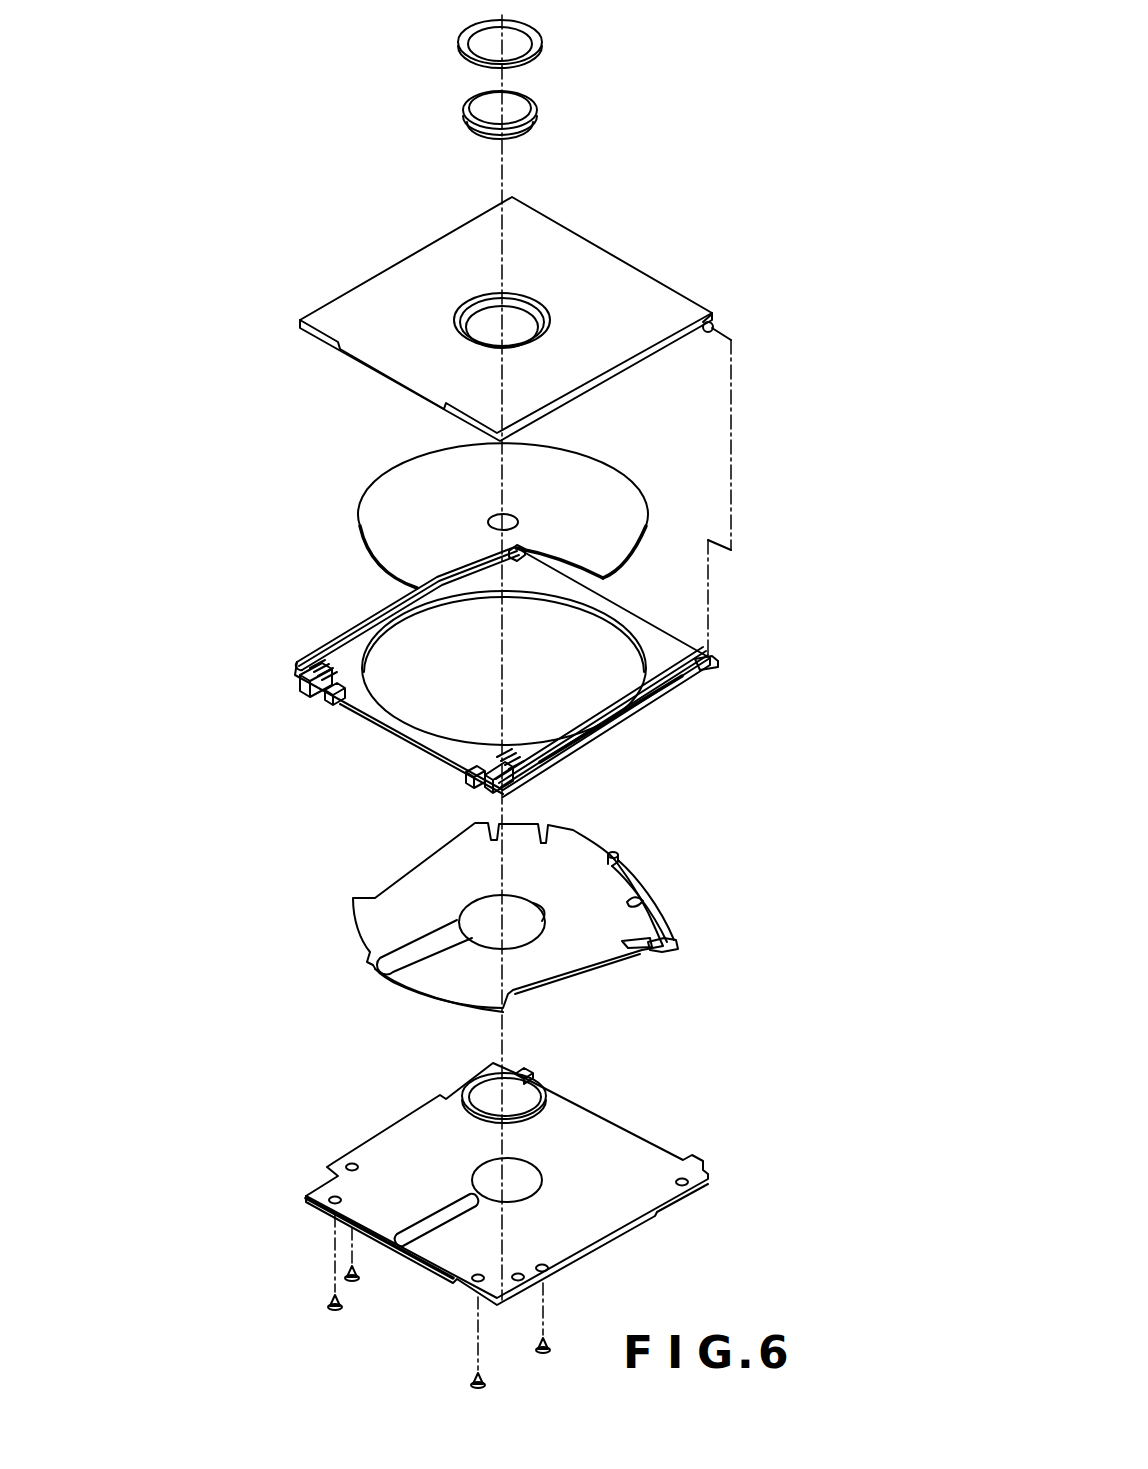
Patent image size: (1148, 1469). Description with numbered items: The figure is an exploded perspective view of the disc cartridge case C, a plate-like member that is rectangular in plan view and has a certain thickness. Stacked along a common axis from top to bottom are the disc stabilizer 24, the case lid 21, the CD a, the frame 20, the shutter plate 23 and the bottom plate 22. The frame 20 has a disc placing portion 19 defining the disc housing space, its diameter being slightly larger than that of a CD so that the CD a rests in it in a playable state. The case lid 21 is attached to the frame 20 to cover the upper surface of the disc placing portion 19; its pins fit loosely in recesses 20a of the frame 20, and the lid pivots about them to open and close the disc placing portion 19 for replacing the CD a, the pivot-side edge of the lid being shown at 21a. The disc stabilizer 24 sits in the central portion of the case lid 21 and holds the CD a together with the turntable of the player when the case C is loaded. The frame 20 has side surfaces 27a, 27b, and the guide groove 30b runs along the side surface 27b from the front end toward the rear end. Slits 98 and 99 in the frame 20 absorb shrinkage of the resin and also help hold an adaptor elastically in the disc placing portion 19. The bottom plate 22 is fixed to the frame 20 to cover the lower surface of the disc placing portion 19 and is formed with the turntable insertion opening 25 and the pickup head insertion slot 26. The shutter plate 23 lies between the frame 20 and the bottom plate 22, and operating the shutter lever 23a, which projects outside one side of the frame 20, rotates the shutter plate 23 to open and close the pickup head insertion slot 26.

The disc stabilizer 24 is at (522, 102).
The disc cartridge case c is at (689, 172).
The case lid 21 is at (633, 290).
The hinge knuckle 21a is at (716, 322).
The CD a is at (641, 491).
The recess 20a is at (519, 546).
The frame 20 is at (665, 643).
The disc placing portion 19 is at (553, 598).
The side surface 27a is at (360, 618).
The side surface 27b is at (578, 748).
The guide groove 30b is at (617, 723).
The slit 98 is at (347, 703).
The slit 99 is at (433, 752).
The shutter plate 23 is at (567, 850).
The shutter lever 23a is at (672, 933).
The bottom plate 22 is at (637, 1142).
The turntable insertion opening 25 is at (528, 1178).
The pickup head insertion slot 26 is at (436, 1213).